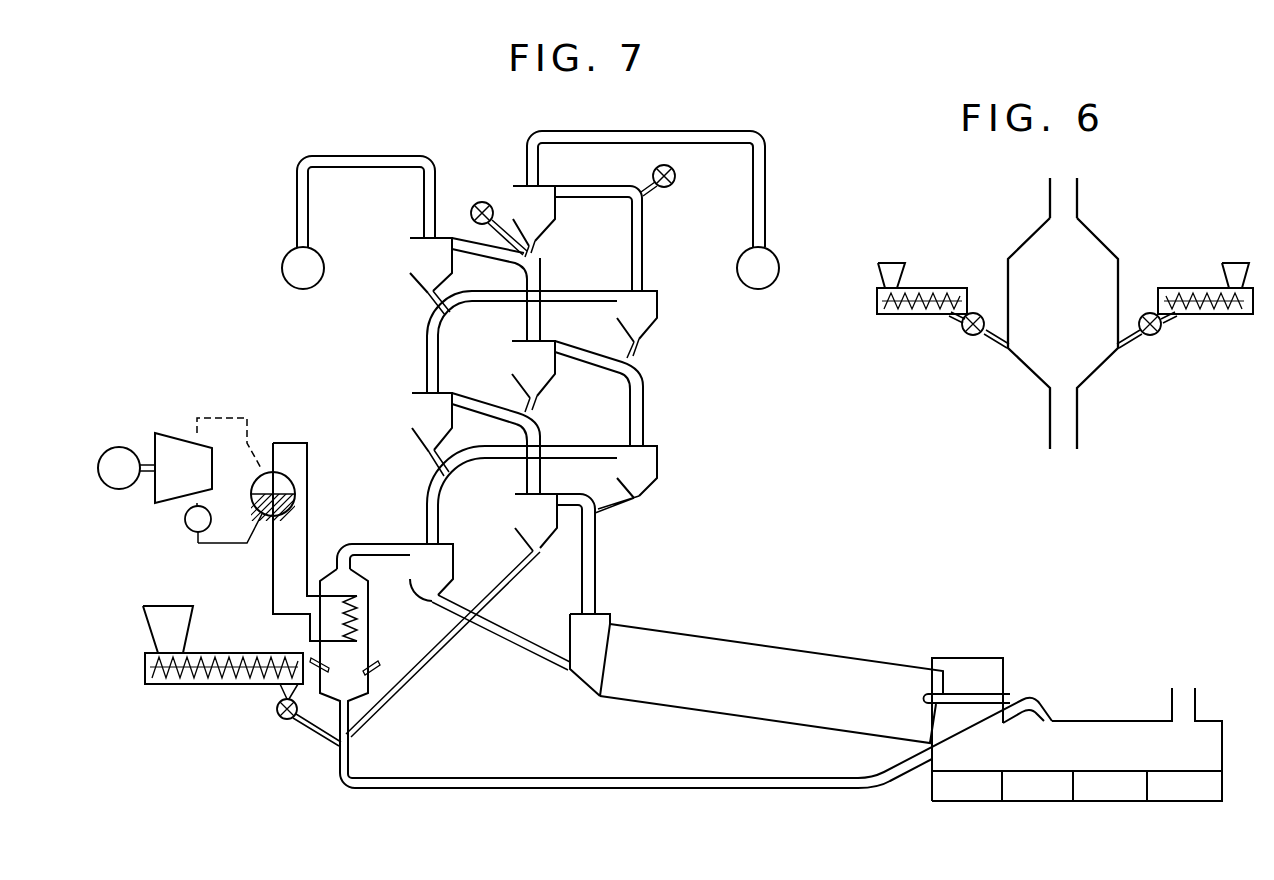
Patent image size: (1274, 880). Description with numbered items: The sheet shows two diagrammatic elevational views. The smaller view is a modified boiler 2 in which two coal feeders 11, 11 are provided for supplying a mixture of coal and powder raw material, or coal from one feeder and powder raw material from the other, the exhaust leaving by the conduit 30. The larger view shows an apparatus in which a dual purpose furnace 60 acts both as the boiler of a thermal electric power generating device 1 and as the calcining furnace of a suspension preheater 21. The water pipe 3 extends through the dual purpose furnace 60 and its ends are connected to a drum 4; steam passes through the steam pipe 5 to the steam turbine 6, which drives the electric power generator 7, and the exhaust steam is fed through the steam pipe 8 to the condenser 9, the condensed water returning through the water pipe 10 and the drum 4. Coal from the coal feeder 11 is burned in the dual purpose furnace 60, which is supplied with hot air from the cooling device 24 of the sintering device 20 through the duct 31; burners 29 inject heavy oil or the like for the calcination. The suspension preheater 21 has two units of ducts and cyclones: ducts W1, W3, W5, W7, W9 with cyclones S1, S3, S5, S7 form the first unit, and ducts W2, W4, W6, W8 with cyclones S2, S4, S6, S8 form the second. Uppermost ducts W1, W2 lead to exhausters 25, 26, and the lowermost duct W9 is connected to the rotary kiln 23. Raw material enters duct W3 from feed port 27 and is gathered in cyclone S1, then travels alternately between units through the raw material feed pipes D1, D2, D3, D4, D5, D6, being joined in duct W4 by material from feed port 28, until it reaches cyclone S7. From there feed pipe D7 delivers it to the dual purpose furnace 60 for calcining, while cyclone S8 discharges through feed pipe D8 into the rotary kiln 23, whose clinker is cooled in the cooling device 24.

In FIG. 7, the thermal electric power generating device 1 is at (104, 616).
In FIG. 6, the boiler 2 is at (1120, 262).
In FIG. 7, the water pipe 3 is at (356, 583).
In FIG. 7, the drum 4 is at (287, 476).
In FIG. 7, the steam pipe 5 is at (233, 414).
In FIG. 7, the steam turbine 6 is at (160, 503).
In FIG. 7, the electric power generator 7 is at (112, 488).
In FIG. 7, the steam pipe 8 is at (203, 499).
In FIG. 7, the condenser 9 is at (178, 539).
In FIG. 7, the water pipe 10 is at (222, 545).
In FIG. 7, the coal feeder 11 is at (215, 685).
In FIG. 6, the coal feeder 11 is at (928, 316).
In FIG. 7, the sintering device 20 is at (879, 628).
In FIG. 7, the suspension preheater 21 is at (728, 400).
In FIG. 7, the rotary kiln 23 is at (797, 650).
In FIG. 7, the cooling device 24 is at (1108, 718).
In FIG. 7, the exhauster 25 is at (772, 286).
In FIG. 7, the exhauster 26 is at (311, 288).
In FIG. 7, the feed port of raw material supplying device 27 is at (676, 176).
In FIG. 7, the feed port of raw material supplying device 28 is at (482, 200).
In FIG. 7, the burner 29 is at (373, 660).
In FIG. 7, the conduit 30 is at (355, 543).
In FIG. 6, the conduit 30 is at (1078, 195).
In FIG. 7, the duct 31 is at (645, 790).
In FIG. 7, the dual purpose furnace 60 is at (373, 621).
In FIG. 7, the cyclone S1 is at (556, 230).
In FIG. 7, the cyclone S2 is at (412, 272).
In FIG. 7, the cyclone S3 is at (658, 318).
In FIG. 7, the cyclone S4 is at (556, 375).
In FIG. 7, the cyclone S5 is at (413, 427).
In FIG. 7, the cyclone S6 is at (658, 472).
In FIG. 7, the cyclone S7 is at (557, 531).
In FIG. 7, the cyclone S8 is at (454, 582).
In FIG. 7, the raw material feed pipe D1 is at (538, 250).
In FIG. 7, the raw material feed pipe D2 is at (437, 305).
In FIG. 7, the raw material feed pipe D3 is at (641, 348).
In FIG. 7, the raw material feed pipe D4 is at (540, 410).
In FIG. 7, the raw material feed pipe D5 is at (439, 462).
In FIG. 7, the raw material feed pipe D6 is at (618, 505).
In FIG. 7, the raw material feed pipe D7 is at (504, 575).
In FIG. 7, the raw material feed pipe D8 is at (517, 656).
In FIG. 7, the duct W1 is at (766, 170).
In FIG. 7, the duct W2 is at (348, 155).
In FIG. 7, the duct W3 is at (643, 247).
In FIG. 7, the duct W4 is at (541, 322).
In FIG. 7, the duct W5 is at (427, 352).
In FIG. 7, the duct W6 is at (644, 395).
In FIG. 7, the duct W7 is at (541, 470).
In FIG. 7, the duct W8 is at (439, 520).
In FIG. 7, the duct W9 is at (596, 578).